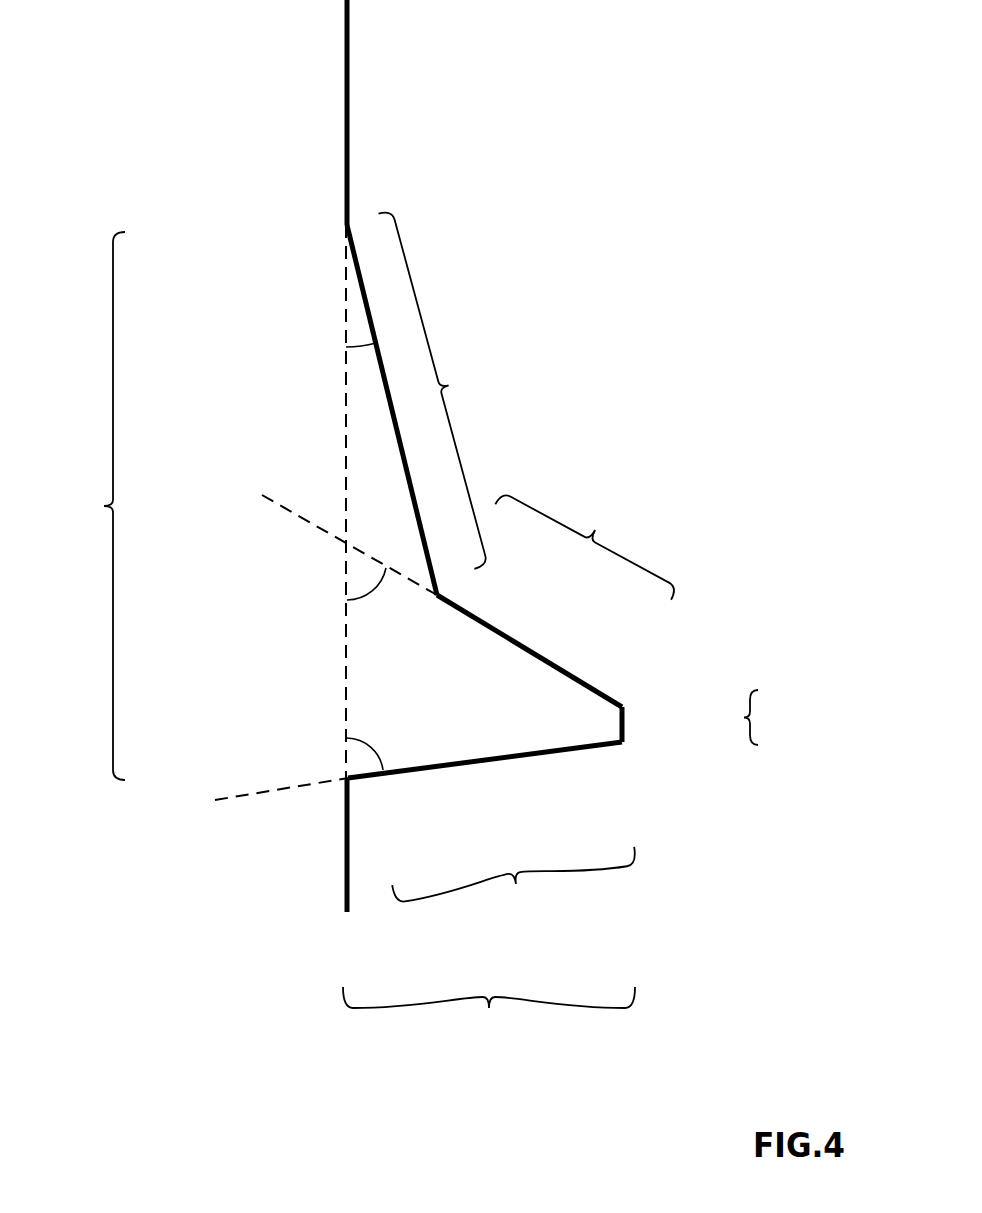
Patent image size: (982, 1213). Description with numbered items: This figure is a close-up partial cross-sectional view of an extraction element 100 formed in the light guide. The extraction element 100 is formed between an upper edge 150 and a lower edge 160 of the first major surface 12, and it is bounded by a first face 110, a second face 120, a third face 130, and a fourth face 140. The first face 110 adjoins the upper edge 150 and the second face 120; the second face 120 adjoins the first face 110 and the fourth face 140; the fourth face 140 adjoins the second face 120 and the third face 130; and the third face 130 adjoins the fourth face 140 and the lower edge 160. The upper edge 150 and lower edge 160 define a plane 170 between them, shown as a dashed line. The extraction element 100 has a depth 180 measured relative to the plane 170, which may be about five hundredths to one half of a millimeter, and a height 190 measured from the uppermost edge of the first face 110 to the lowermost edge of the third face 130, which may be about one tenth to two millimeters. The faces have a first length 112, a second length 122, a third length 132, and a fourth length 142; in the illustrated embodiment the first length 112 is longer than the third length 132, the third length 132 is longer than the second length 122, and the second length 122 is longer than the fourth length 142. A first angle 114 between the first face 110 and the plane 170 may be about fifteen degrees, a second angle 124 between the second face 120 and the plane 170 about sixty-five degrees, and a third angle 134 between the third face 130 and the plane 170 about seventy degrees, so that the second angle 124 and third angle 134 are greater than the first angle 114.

The first major surface 12 is at (246, 62).
The extraction element 100 is at (757, 257).
The first face 110 is at (393, 425).
The first length 112 is at (442, 388).
The first angle 114 is at (365, 345).
The second face 120 is at (540, 652).
The second length 122 is at (589, 540).
The second angle 124 is at (368, 600).
The third face 130 is at (476, 765).
The third length 132 is at (514, 887).
The third angle 134 is at (367, 738).
The fourth face 140 is at (627, 720).
The fourth length 142 is at (780, 717).
The upper edge 150 is at (346, 163).
The lower edge 160 is at (346, 843).
The plane 170 is at (345, 446).
The depth 180 is at (489, 1017).
The height 190 is at (85, 506).